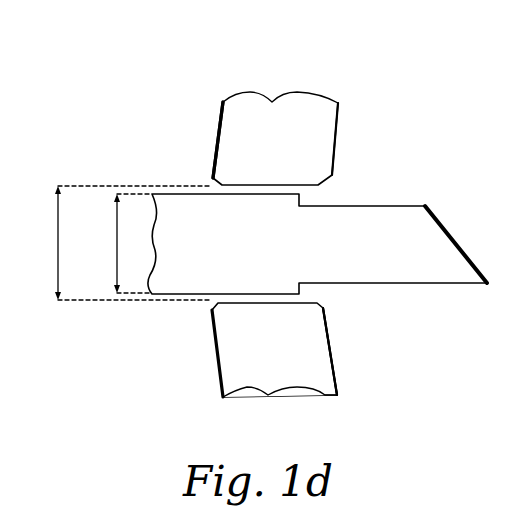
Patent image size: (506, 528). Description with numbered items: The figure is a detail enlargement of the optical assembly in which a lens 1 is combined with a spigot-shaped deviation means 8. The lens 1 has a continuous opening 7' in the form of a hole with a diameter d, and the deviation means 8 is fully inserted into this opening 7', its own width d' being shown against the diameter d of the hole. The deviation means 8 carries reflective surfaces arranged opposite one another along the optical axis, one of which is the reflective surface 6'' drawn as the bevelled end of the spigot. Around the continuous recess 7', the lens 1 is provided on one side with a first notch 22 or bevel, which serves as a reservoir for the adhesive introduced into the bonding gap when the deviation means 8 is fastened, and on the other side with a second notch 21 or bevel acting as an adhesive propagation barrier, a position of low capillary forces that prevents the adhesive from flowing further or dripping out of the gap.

The lens 1 is at (268, 118).
The deviation means 8 is at (197, 272).
The reflective surface 6'' is at (460, 205).
The continuous opening 7' is at (363, 120).
The second notch 21 is at (213, 180).
The first notch 22 is at (320, 307).
The diameter d is at (114, 277).
The blade thickness dimension d' is at (103, 310).